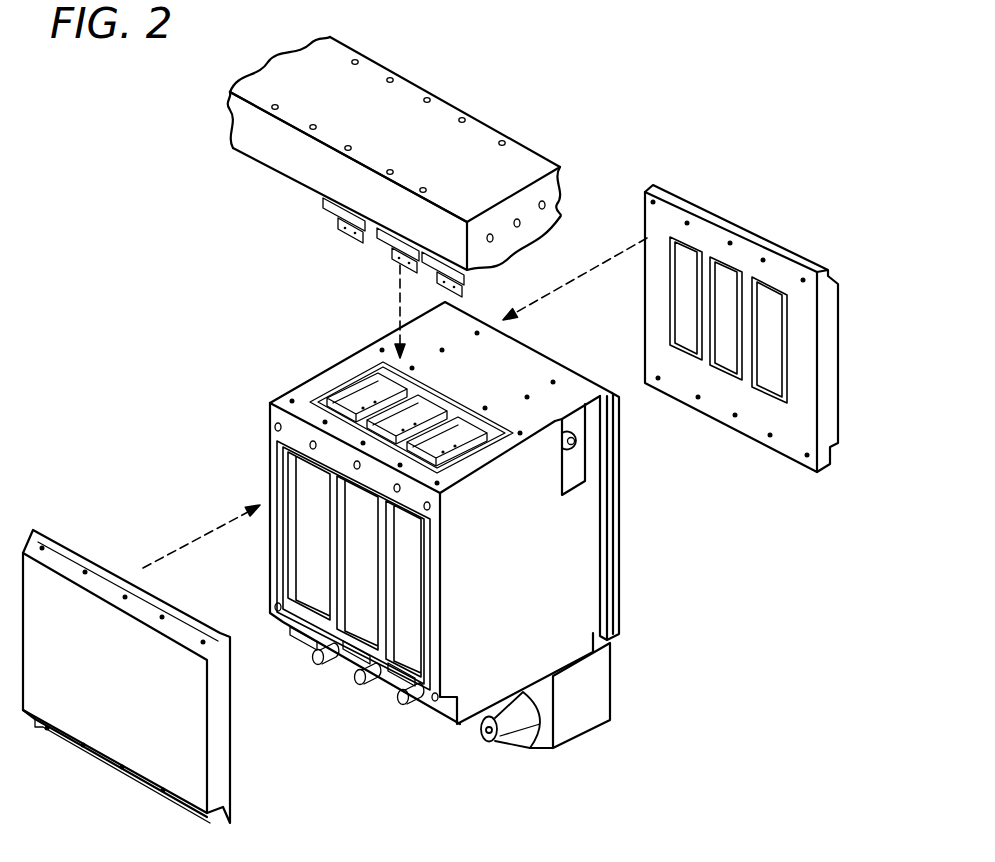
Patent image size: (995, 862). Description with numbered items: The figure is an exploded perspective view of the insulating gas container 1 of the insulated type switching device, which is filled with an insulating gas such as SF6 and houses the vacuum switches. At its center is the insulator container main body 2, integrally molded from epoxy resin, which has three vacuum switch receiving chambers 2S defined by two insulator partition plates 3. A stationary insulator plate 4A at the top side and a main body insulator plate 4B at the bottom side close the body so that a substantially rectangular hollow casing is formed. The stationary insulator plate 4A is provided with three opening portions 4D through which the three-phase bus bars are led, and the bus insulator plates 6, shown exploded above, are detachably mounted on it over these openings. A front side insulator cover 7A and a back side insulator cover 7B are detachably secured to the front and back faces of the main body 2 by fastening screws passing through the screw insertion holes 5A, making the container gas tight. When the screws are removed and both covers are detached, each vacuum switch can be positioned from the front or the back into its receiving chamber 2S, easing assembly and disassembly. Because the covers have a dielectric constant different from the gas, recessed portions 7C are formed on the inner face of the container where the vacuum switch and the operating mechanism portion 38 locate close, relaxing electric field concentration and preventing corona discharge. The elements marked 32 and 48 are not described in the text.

The insulating gas container 1 is at (195, 277).
The insulator container main body 2 is at (567, 568).
The vacuum switch receiving chamber 2S is at (412, 580).
The insulator partition plate 3 is at (333, 523).
The stationary insulator plate 4A is at (537, 358).
The main body insulator plate 4B is at (610, 683).
The opening portion 4D is at (357, 403).
The screw insertion hole 5A is at (313, 126).
The bus insulator plate 6 is at (478, 127).
The front side insulator cover 7A is at (70, 545).
The back side insulator cover 7B is at (730, 223).
The recessed portion 7C is at (777, 350).
The terminal pin 32 is at (400, 697).
The operating mechanism portion 38 is at (577, 442).
The nozzle 48 is at (517, 723).